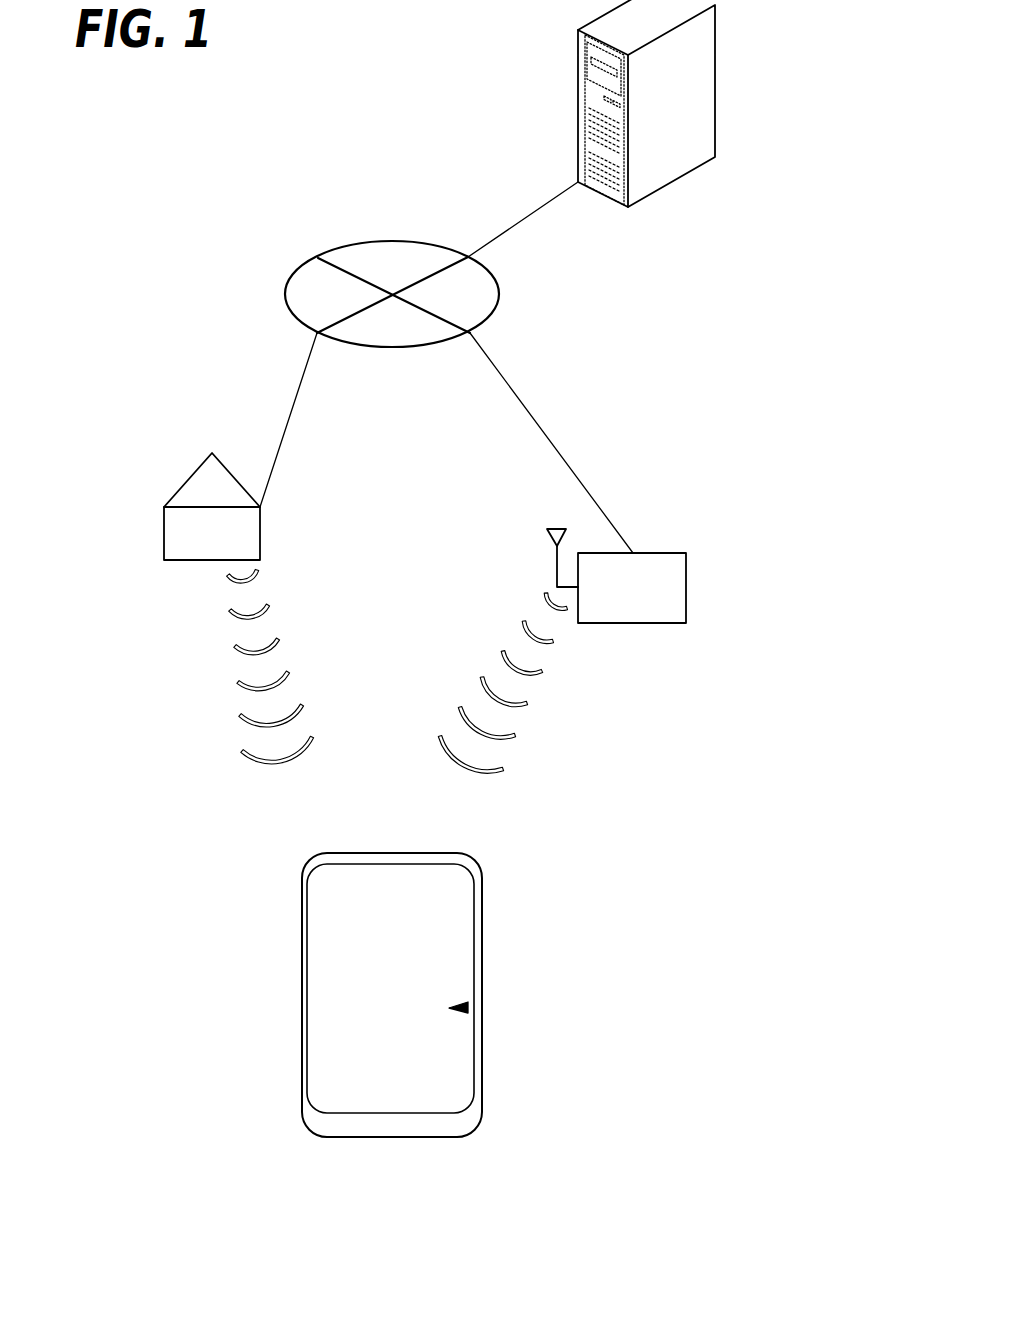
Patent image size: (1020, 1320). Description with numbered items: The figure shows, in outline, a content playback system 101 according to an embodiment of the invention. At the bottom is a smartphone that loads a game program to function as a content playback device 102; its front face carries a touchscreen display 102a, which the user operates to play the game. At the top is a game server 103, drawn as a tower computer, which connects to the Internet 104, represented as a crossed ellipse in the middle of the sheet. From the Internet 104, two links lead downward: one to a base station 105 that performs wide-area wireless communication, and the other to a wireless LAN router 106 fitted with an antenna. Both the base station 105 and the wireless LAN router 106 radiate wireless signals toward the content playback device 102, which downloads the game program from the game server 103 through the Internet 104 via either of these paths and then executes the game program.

The content playback system 101 is at (478, 632).
The content playback device 102 is at (387, 1138).
The touchscreen display 102a is at (468, 1007).
The game server 103 is at (716, 80).
The Internet 104 is at (499, 295).
The base station 105 is at (261, 537).
The wireless LAN router 106 is at (687, 586).